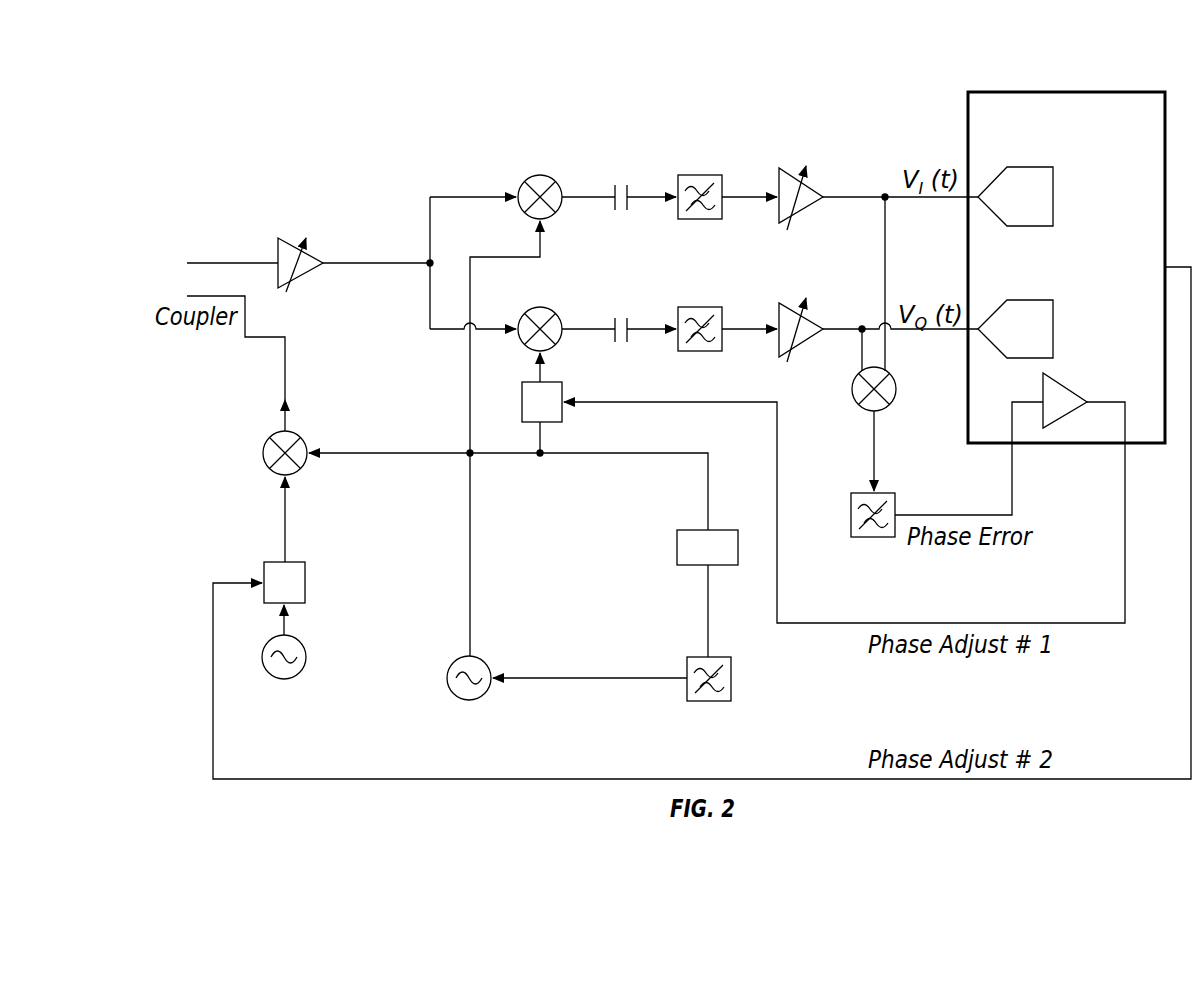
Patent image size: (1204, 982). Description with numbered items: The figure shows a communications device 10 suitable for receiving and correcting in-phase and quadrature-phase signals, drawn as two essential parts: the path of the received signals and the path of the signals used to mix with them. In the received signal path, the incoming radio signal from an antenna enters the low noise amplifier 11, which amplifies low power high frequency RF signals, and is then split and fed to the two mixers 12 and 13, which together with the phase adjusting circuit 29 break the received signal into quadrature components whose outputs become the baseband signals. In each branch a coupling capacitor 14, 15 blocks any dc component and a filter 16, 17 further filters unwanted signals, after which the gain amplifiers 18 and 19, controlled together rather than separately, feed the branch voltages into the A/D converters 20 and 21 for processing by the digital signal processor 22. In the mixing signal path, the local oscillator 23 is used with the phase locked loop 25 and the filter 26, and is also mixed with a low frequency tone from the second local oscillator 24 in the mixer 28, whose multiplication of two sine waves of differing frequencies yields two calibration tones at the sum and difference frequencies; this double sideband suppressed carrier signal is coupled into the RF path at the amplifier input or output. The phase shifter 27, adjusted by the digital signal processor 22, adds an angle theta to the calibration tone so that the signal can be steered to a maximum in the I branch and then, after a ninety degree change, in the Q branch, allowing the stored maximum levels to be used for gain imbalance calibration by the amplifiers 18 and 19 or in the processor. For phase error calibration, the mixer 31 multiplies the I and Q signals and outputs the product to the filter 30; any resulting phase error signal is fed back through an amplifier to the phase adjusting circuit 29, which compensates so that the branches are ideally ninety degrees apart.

The communications device 10 is at (198, 132).
The low noise amplifier 11 is at (289, 240).
The mixer 12 is at (535, 176).
The mixer 13 is at (535, 310).
The coupling capacitor 14 is at (621, 185).
The coupling capacitor 15 is at (627, 342).
The filter 16 is at (712, 175).
The filter 17 is at (712, 351).
The gain amplifier 18 is at (815, 186).
The gain amplifier 19 is at (815, 319).
The A/D converter 20 is at (1035, 167).
The A/D converter 21 is at (1035, 300).
The digital signal processor 22 is at (1133, 92).
The local oscillator 23 is at (457, 660).
The local oscillator 24 is at (273, 640).
The phase locked loop 25 is at (694, 530).
The filter 26 is at (715, 700).
The phase shifter 27 is at (275, 562).
The mixer 28 is at (275, 433).
The phase adjusting circuit 29 is at (550, 422).
The filter 30 is at (888, 493).
The mixer 31 is at (893, 375).